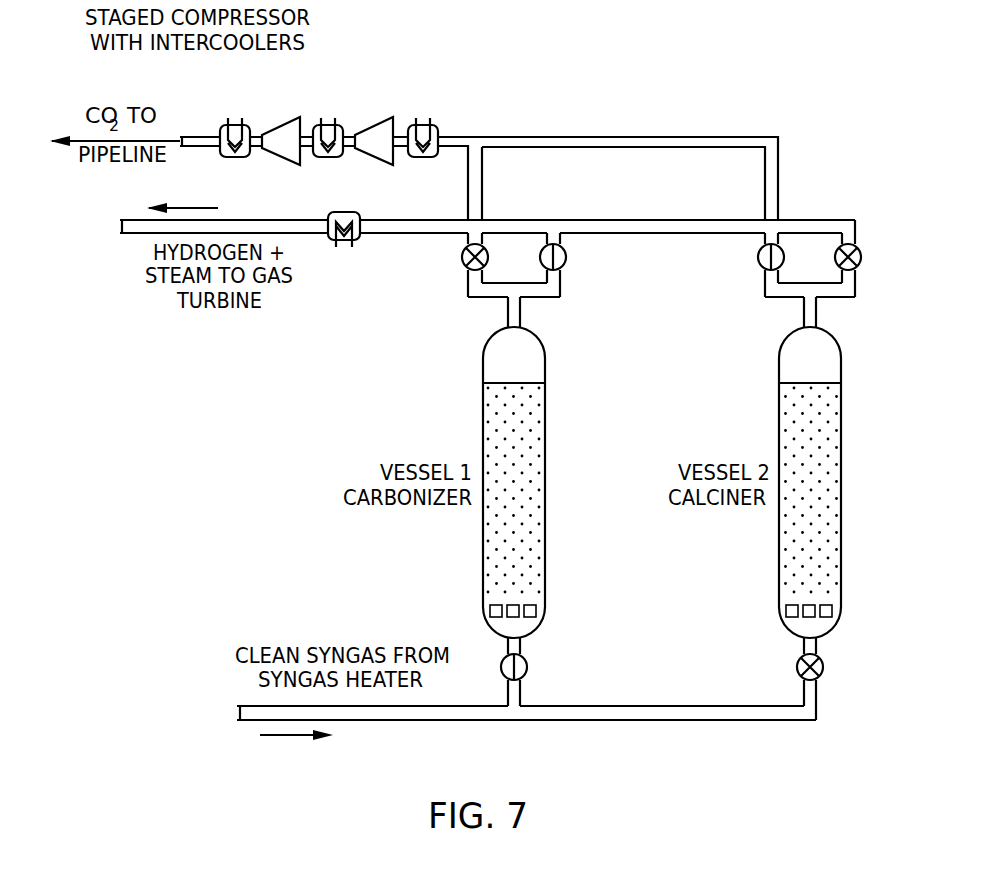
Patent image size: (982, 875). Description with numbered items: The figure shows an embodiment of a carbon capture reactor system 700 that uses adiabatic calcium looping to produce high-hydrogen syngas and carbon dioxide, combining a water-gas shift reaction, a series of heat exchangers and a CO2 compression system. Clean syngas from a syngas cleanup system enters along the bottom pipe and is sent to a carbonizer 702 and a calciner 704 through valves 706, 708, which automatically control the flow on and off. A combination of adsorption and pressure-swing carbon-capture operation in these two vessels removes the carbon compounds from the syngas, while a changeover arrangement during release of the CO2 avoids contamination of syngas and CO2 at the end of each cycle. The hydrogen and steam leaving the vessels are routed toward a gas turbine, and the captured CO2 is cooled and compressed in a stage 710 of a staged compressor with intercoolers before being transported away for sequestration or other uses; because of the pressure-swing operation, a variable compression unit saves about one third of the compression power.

The carbon capture reactor system 700 is at (726, 38).
The carbonizer 702 is at (483, 443).
The calciner 704 is at (779, 443).
The valve 706 is at (527, 667).
The valve 708 is at (823, 667).
The stage 710 is at (325, 125).